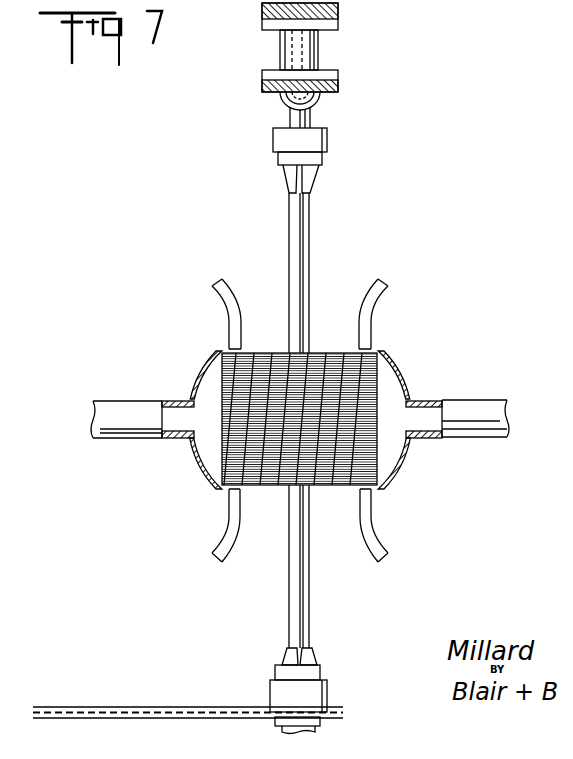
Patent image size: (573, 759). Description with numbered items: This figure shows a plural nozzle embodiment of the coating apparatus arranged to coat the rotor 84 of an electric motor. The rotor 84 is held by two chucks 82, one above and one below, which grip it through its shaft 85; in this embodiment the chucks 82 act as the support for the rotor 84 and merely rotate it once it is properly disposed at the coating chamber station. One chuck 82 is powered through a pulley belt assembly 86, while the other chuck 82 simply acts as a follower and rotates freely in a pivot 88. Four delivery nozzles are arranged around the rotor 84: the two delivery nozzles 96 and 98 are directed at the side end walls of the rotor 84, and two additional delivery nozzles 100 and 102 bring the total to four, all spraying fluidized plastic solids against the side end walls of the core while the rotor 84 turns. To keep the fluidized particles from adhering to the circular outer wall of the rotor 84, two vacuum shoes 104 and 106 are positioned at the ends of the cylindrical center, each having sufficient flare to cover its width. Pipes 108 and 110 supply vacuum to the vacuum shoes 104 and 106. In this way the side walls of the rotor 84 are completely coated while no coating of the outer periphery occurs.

The chuck 82 is at (284, 173).
The rotor 84 is at (266, 356).
The shaft 85 is at (297, 242).
The pulley belt assembly 86 is at (91, 707).
The pivot 88 is at (321, 104).
The delivery nozzle 96 is at (372, 531).
The delivery nozzle 98 is at (380, 299).
The delivery nozzle 100 is at (223, 297).
The delivery nozzle 102 is at (226, 537).
The vacuum shoe 104 is at (401, 371).
The vacuum shoe 106 is at (197, 370).
The pipe 108 is at (480, 411).
The pipe 110 is at (113, 408).